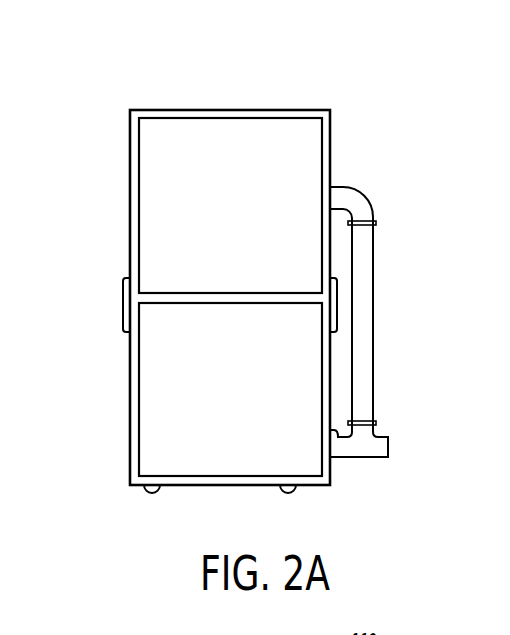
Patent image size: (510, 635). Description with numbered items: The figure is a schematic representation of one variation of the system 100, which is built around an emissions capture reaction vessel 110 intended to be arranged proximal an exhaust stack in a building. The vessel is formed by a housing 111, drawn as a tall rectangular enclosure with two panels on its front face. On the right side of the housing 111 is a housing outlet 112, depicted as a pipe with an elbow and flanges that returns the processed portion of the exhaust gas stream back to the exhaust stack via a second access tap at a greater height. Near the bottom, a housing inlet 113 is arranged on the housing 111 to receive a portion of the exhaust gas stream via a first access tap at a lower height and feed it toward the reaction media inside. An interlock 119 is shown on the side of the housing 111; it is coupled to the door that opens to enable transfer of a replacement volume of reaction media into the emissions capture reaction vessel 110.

The system 100 is at (58, 88).
The emissions capture reaction vessel 110 is at (329, 109).
The housing 111 is at (135, 405).
The housing outlet 112 is at (350, 192).
The housing inlet 113 is at (365, 448).
The interlock 119 is at (126, 318).